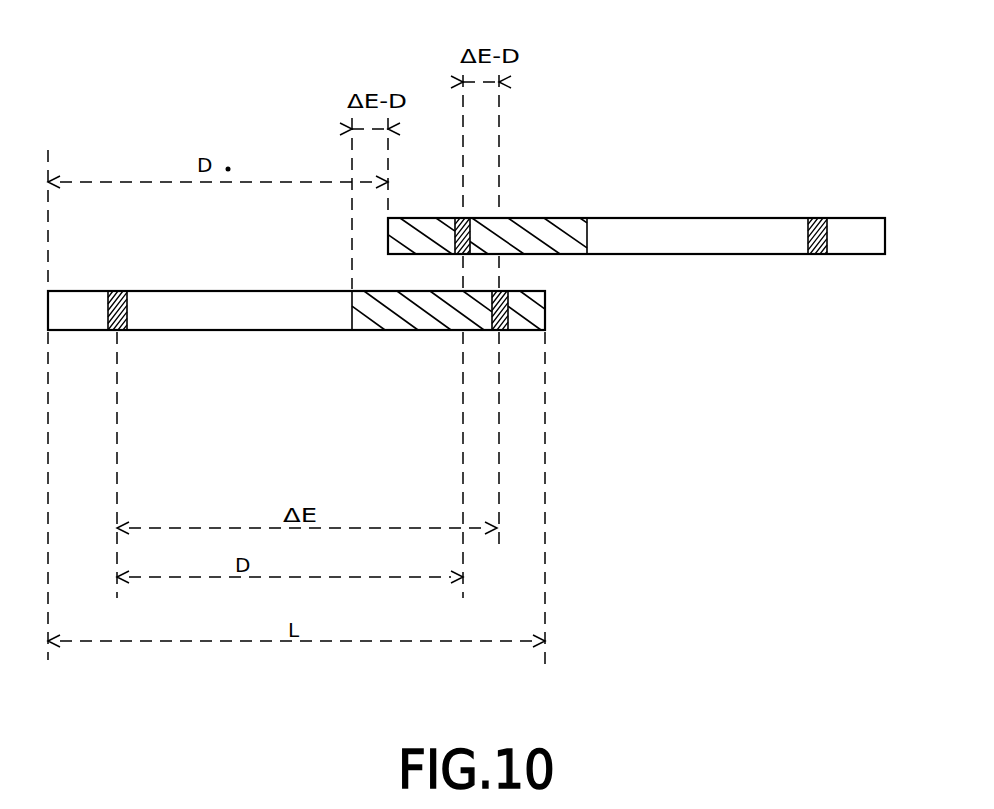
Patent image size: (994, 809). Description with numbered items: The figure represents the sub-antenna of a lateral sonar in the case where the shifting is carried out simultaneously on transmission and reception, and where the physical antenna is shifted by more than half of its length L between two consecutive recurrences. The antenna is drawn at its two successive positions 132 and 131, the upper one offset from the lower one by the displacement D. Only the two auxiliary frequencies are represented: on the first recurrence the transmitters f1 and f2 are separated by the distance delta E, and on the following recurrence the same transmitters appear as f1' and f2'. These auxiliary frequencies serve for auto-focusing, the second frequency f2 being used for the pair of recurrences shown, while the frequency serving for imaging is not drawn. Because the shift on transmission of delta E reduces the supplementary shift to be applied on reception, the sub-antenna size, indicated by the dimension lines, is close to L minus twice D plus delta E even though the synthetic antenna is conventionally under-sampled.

The first grating bar / scale element 131 is at (636, 202).
The second grating bar / scale element 132 is at (344, 347).
The auxiliary frequency f1 is at (132, 347).
The auxiliary frequency f2 is at (485, 348).
The first marking of scale 131 f1' is at (829, 202).
The second marking of scale 131 f2' is at (471, 204).